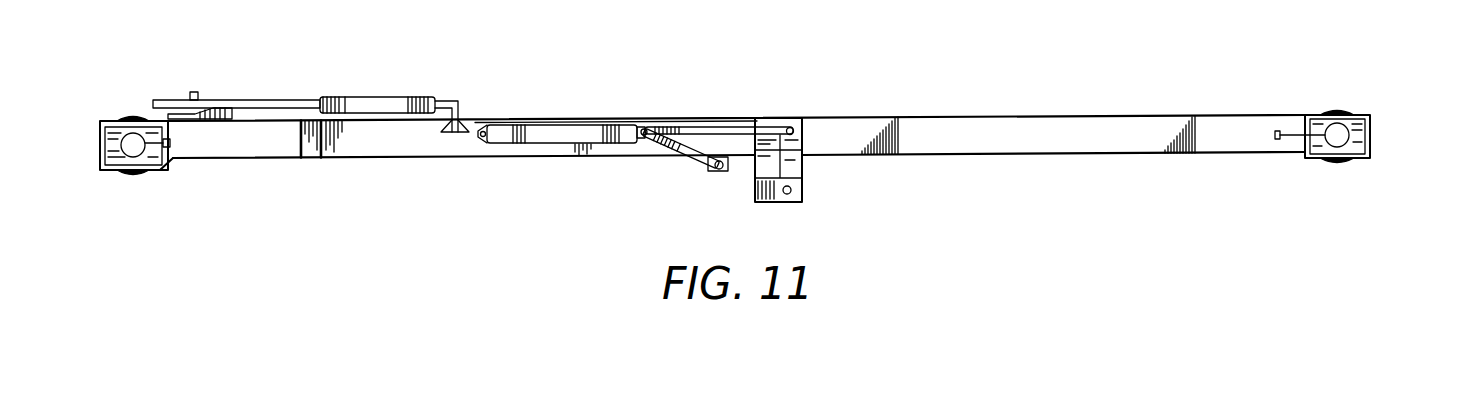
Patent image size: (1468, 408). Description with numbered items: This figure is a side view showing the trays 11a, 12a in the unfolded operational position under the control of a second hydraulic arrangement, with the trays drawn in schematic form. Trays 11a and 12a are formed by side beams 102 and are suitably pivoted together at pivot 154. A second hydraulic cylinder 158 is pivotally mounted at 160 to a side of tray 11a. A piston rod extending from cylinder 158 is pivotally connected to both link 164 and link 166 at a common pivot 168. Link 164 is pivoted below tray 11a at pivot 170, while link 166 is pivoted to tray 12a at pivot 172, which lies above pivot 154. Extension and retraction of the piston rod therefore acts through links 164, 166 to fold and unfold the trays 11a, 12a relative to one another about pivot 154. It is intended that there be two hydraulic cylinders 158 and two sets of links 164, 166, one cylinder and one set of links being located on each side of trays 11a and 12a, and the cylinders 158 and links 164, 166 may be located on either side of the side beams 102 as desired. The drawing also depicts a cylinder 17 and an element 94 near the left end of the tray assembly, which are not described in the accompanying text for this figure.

The tray 11a is at (265, 161).
The tray 12a is at (1078, 117).
The hydraulic cylinder 17 is at (372, 105).
The cam 94 is at (204, 112).
The side beams 102 is at (366, 148).
The pivot 154 is at (798, 191).
The second hydraulic cylinder 158 is at (568, 125).
The pivotal mounting 160 is at (483, 138).
The link 164 is at (660, 148).
The link 166 is at (721, 127).
The pivot 168 is at (643, 127).
The pivot 170 is at (718, 172).
The pivot 172 is at (794, 127).